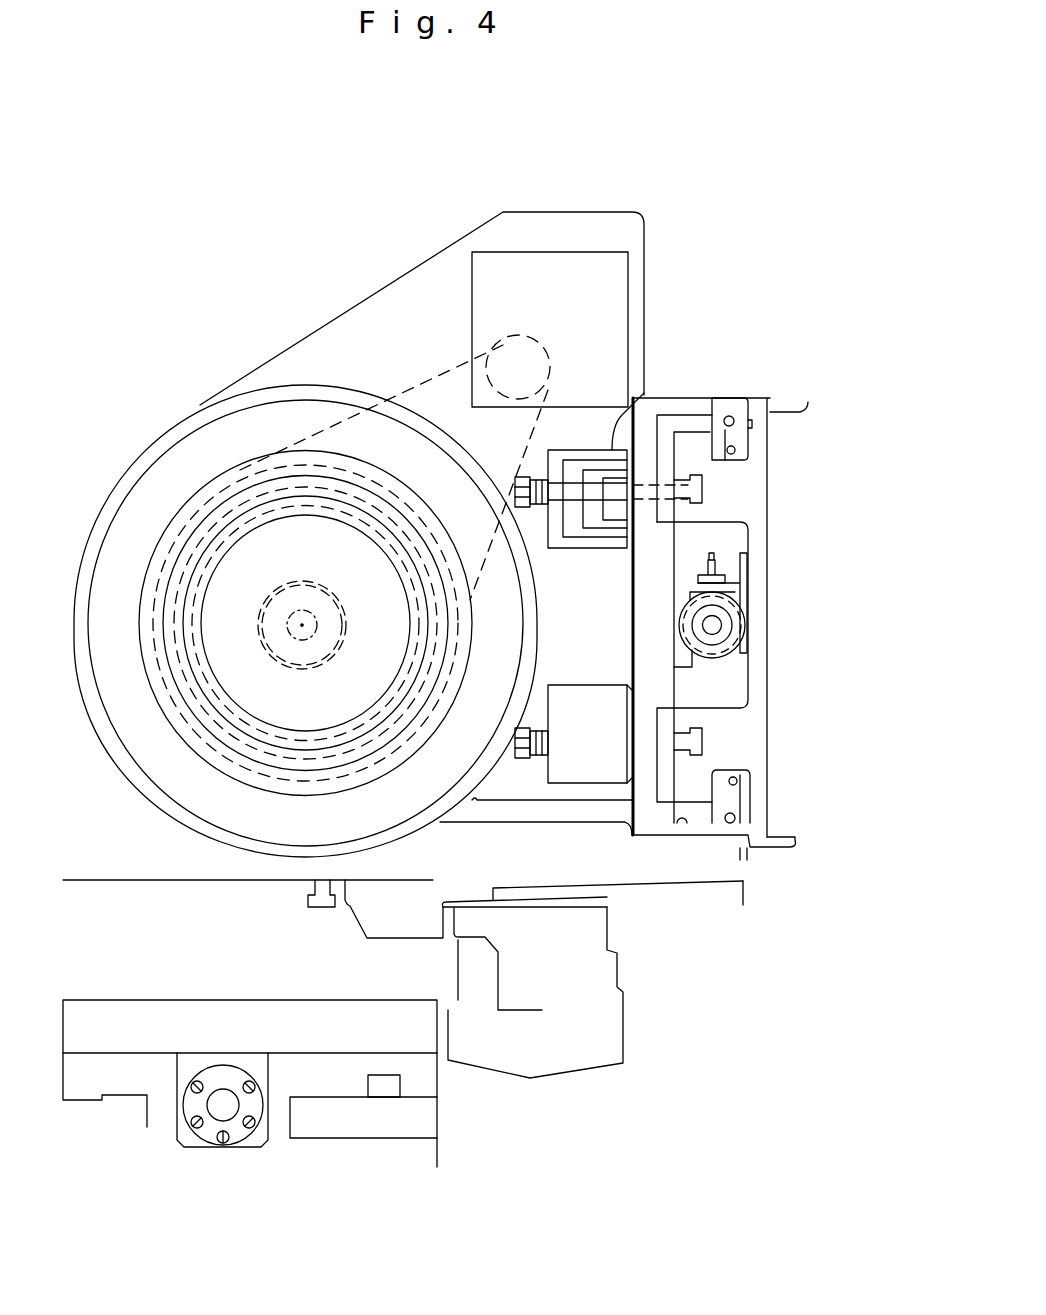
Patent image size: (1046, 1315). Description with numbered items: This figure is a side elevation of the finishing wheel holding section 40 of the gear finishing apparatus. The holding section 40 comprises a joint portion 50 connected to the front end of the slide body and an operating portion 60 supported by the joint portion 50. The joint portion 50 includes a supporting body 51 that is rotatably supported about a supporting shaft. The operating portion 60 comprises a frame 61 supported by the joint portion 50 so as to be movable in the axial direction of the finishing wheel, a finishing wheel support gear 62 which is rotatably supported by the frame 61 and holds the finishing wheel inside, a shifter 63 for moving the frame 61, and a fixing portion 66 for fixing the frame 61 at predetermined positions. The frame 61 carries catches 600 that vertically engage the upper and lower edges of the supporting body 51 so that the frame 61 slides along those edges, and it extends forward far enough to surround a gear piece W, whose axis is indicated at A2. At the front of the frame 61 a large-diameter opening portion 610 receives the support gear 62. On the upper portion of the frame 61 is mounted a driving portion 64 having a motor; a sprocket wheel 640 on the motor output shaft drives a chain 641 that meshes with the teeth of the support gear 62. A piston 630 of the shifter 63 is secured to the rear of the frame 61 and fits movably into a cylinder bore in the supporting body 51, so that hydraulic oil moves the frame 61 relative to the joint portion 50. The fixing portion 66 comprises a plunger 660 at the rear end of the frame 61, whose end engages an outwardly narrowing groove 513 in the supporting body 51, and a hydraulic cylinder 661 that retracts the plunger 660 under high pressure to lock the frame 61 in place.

The finishing wheel holding section 40 is at (810, 297).
The joint portion 50 is at (850, 387).
The supporting body 51 is at (768, 652).
The operating portion 60 is at (683, 292).
The frame 61 is at (183, 463).
The finishing wheel support gear 62 is at (193, 573).
The shifter 63 is at (785, 605).
The driving portion 64 is at (580, 314).
The fixing portion 66 is at (658, 441).
The catches 600 is at (736, 448).
The opening portion 610 is at (328, 720).
The piston 630 is at (713, 624).
The sprocket wheel 640 is at (492, 345).
The chain 641 is at (440, 375).
The plunger 660 is at (702, 496).
The hydraulic cylinder 661 is at (612, 447).
The groove 513 is at (702, 488).
The gear piece W is at (344, 620).
The rotation axis A2 is at (201, 618).